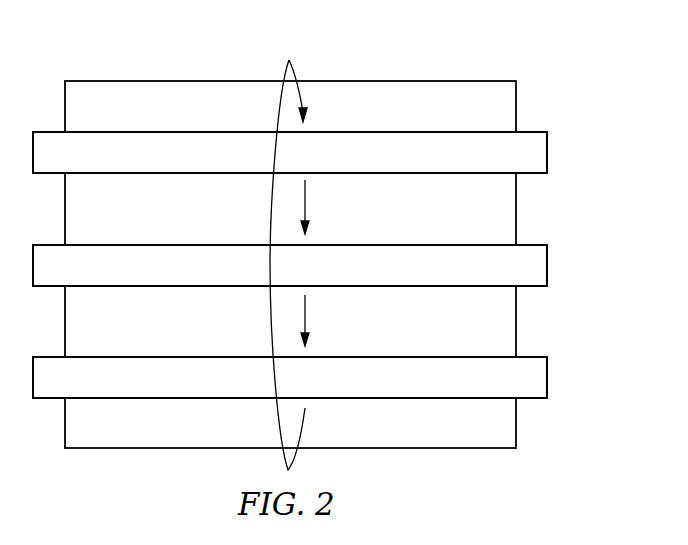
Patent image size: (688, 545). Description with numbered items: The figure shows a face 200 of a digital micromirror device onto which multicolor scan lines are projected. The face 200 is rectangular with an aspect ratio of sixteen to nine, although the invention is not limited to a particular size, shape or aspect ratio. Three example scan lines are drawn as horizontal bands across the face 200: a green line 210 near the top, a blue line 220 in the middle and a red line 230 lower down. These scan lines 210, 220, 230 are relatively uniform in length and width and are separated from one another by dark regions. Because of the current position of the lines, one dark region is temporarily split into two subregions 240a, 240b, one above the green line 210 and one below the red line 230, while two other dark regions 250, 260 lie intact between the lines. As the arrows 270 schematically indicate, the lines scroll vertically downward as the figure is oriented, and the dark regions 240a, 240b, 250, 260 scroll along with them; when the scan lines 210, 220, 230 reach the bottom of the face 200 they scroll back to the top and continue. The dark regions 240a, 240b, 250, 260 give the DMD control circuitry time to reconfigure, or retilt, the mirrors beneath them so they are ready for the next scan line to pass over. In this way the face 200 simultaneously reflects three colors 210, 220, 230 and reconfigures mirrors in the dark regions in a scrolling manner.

The face 200 is at (383, 80).
The green line 210 is at (548, 153).
The blue line 220 is at (548, 265).
The red line 230 is at (548, 378).
The subregion 240a is at (192, 120).
The subregion 240b is at (192, 437).
The dark region 250 is at (185, 221).
The dark region 260 is at (185, 334).
The arrows 270 is at (289, 60).